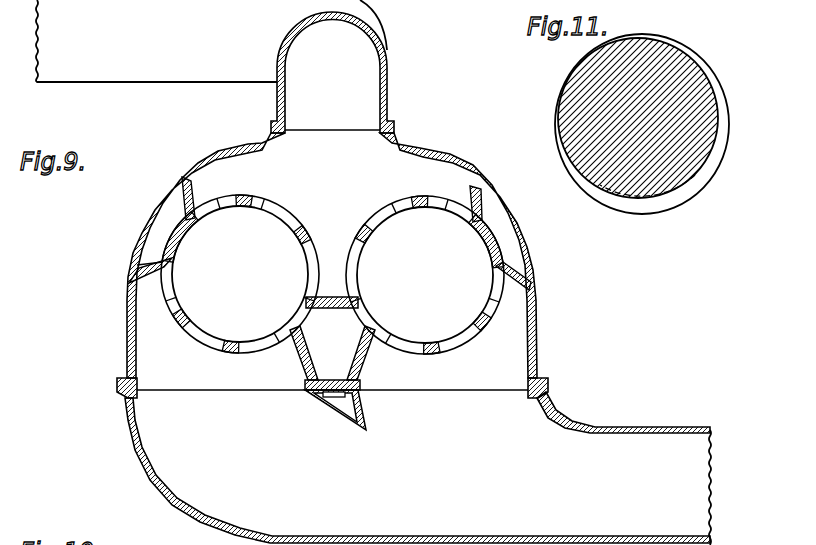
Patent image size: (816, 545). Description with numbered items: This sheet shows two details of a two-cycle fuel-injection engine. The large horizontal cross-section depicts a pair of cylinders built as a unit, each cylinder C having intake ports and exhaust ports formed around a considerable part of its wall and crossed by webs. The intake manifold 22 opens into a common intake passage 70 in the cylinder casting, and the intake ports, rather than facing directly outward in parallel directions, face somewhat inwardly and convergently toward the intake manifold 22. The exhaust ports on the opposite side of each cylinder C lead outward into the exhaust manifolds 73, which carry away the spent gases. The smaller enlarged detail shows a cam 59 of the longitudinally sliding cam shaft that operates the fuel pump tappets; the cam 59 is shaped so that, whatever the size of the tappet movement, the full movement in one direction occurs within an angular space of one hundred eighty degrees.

In FIG. 9, the intake manifold 22 is at (211, 41).
In FIG. 9, the common intake passage 70 is at (332, 97).
In FIG. 9, the exhaust manifolds 73 is at (418, 468).
In FIG. 11, the cam 59 is at (645, 204).
In FIG. 9, the cylinder C is at (508, 238).